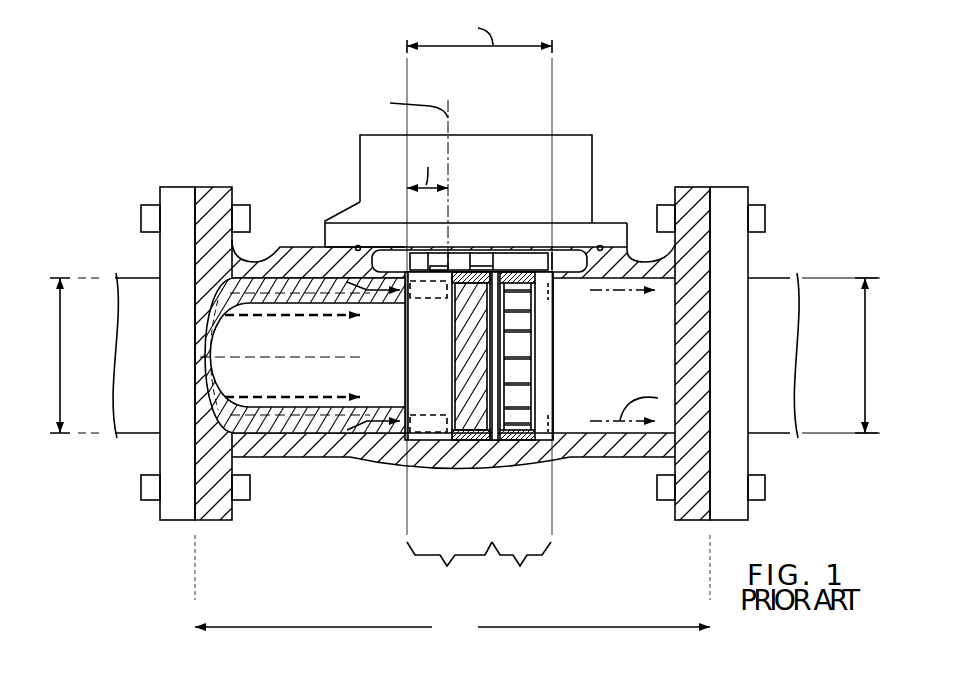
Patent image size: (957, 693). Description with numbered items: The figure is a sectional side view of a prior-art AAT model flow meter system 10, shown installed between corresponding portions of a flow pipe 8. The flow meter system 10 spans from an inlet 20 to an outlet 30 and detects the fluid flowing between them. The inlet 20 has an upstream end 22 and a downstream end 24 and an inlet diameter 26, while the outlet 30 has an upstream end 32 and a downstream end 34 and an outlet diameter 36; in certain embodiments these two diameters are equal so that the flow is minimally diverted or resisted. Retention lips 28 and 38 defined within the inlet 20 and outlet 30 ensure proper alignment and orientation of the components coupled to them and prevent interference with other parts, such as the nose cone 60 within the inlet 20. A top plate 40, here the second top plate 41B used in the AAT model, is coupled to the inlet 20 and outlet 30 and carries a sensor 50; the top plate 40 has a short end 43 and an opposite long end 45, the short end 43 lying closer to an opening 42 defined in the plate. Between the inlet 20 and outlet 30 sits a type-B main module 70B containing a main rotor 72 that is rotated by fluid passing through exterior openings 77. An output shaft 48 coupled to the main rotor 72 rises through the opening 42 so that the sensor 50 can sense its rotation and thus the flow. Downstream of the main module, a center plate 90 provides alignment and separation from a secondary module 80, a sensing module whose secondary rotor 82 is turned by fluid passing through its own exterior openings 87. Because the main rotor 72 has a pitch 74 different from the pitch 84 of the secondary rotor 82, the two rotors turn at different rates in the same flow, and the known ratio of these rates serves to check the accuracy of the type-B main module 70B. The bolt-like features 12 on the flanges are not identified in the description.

The flow meter system 10 is at (168, 67).
The upstream end 22 is at (197, 187).
The inlet 20 is at (266, 195).
The top plate 40 is at (468, 291).
The short end 43 is at (318, 212).
The sensor 50 is at (517, 126).
The downstream end 24 is at (407, 272).
The opening 42 is at (460, 245).
The output shaft 48 is at (466, 262).
The center plate 90 is at (474, 268).
The second top plate 41B is at (583, 108).
The long end 45 is at (635, 222).
The upstream end 32 is at (555, 275).
The outlet 30 is at (680, 300).
The downstream end 34 is at (708, 187).
The bolts 12 is at (757, 220).
The flow pipe 8 is at (133, 330).
The inlet diameter 26 is at (62, 383).
The nose cone 60 is at (210, 415).
The exterior openings 77 is at (400, 435).
The retention lip 28 is at (495, 480).
The main rotor 72 is at (446, 422).
The pitch 74 is at (480, 408).
The type-B main module 70B is at (452, 438).
The secondary module 80 is at (552, 438).
The retention lip 38 is at (550, 450).
The secondary rotor 82 is at (523, 441).
The exterior openings 87 is at (553, 285).
The pitch 84 is at (515, 375).
The outlet diameter 36 is at (868, 360).